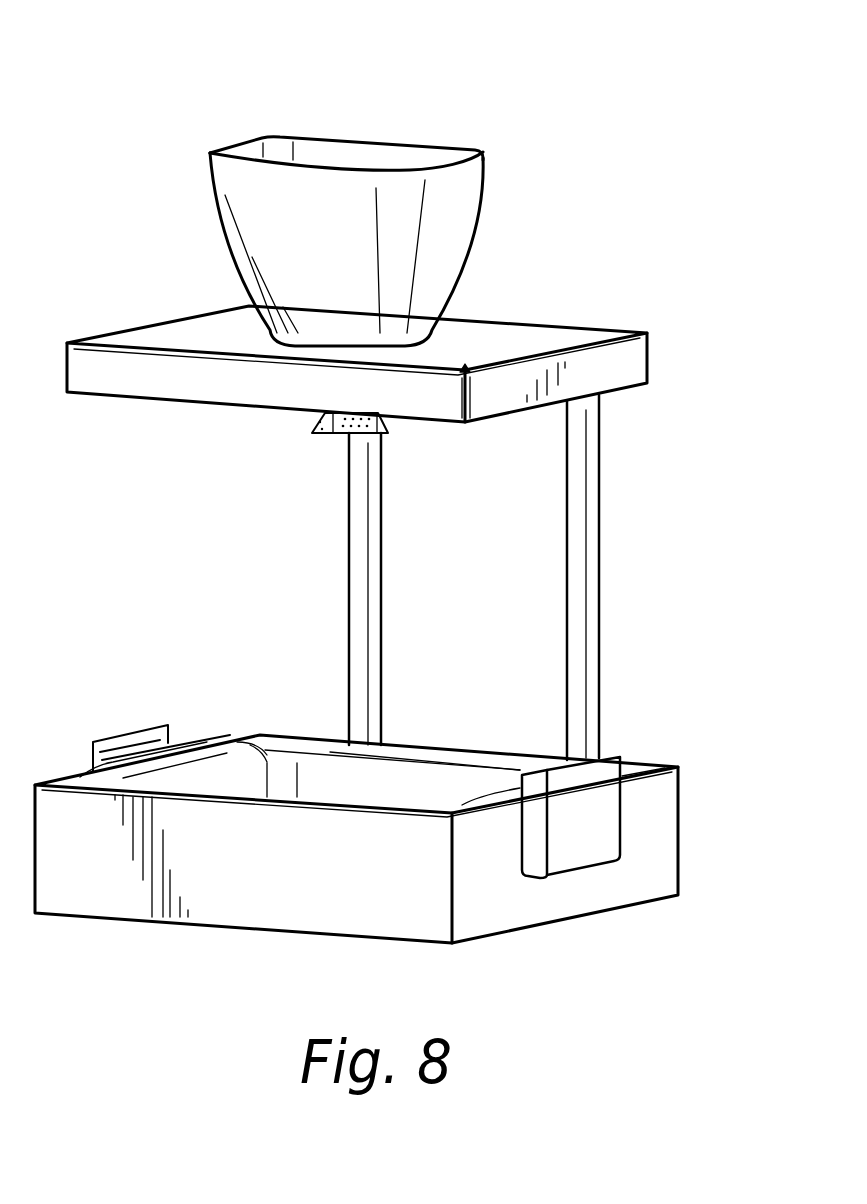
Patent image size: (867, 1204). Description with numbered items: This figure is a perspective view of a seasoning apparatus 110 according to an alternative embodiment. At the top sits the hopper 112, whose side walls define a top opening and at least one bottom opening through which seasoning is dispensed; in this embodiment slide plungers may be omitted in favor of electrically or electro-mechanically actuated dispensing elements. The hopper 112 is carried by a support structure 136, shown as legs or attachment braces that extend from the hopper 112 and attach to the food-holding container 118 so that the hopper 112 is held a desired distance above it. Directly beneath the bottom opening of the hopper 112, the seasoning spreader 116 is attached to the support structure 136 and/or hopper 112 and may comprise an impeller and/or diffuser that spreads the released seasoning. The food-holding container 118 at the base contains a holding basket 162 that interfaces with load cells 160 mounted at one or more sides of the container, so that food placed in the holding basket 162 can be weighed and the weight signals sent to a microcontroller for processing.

The seasoning apparatus 110 is at (431, 55).
The hopper 112 is at (462, 210).
The seasoning spreader 116 is at (318, 436).
The support structure 136 is at (594, 540).
The food-holding container 118 is at (107, 922).
The holding basket 162 is at (227, 778).
The load cells 160 is at (605, 825).